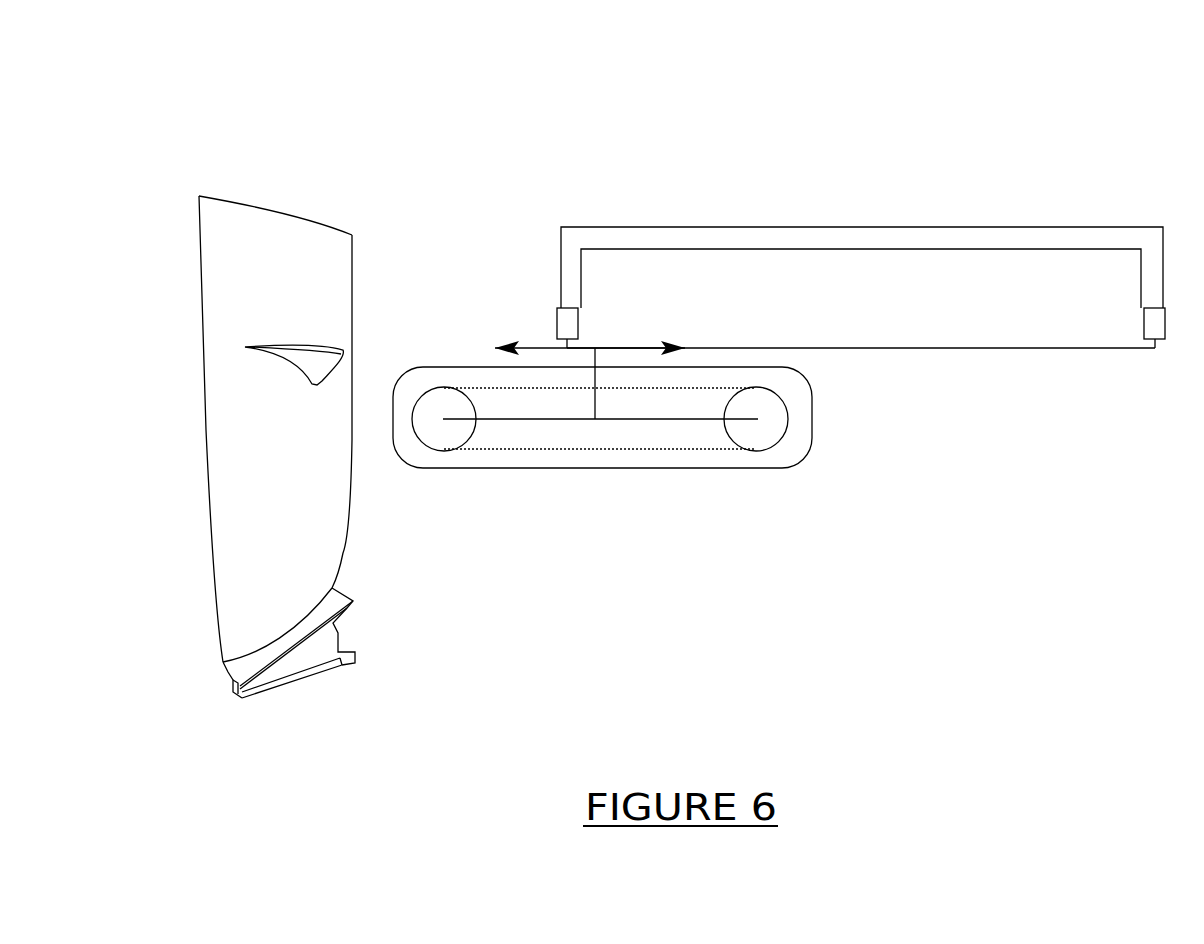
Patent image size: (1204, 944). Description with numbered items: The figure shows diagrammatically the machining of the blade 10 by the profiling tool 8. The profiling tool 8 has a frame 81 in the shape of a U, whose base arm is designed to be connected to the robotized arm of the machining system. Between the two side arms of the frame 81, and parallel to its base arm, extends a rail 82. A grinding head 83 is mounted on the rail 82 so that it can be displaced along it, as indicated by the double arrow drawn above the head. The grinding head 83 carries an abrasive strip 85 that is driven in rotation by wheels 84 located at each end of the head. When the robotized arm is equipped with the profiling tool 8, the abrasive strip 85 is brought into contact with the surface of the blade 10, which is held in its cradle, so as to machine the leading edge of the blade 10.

The profiling tool 8 is at (522, 207).
The blade 10 is at (343, 552).
The frame 81 is at (918, 227).
The rail 82 is at (1048, 347).
The grinding head 83 is at (583, 469).
The wheels 84 is at (788, 422).
The abrasive strip 85 is at (700, 450).